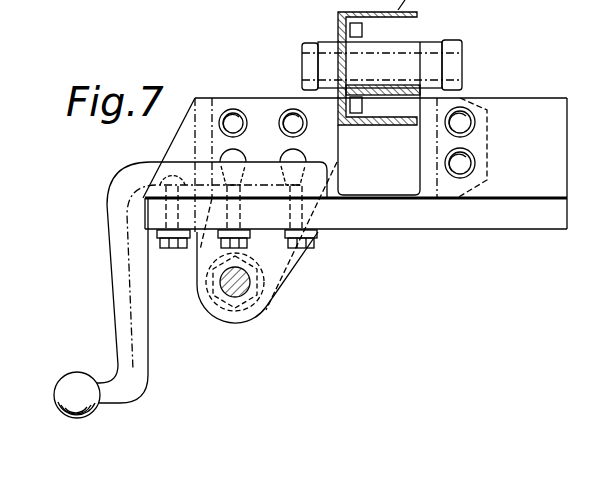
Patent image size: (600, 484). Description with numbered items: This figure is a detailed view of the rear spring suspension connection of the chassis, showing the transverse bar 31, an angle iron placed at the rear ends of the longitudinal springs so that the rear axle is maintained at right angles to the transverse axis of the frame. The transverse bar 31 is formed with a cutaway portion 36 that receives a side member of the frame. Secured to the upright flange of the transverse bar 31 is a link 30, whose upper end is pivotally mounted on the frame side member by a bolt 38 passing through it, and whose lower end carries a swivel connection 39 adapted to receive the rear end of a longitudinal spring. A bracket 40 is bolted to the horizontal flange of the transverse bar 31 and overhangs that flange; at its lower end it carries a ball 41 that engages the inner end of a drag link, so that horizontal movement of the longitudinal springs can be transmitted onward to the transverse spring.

The link 30 is at (281, 258).
The transverse bar 31 is at (558, 171).
The cutaway portion 36 is at (397, 182).
The bolt 38 is at (300, 63).
The swivel connection 39 is at (244, 289).
The bracket 40 is at (115, 257).
The ball 41 is at (77, 374).